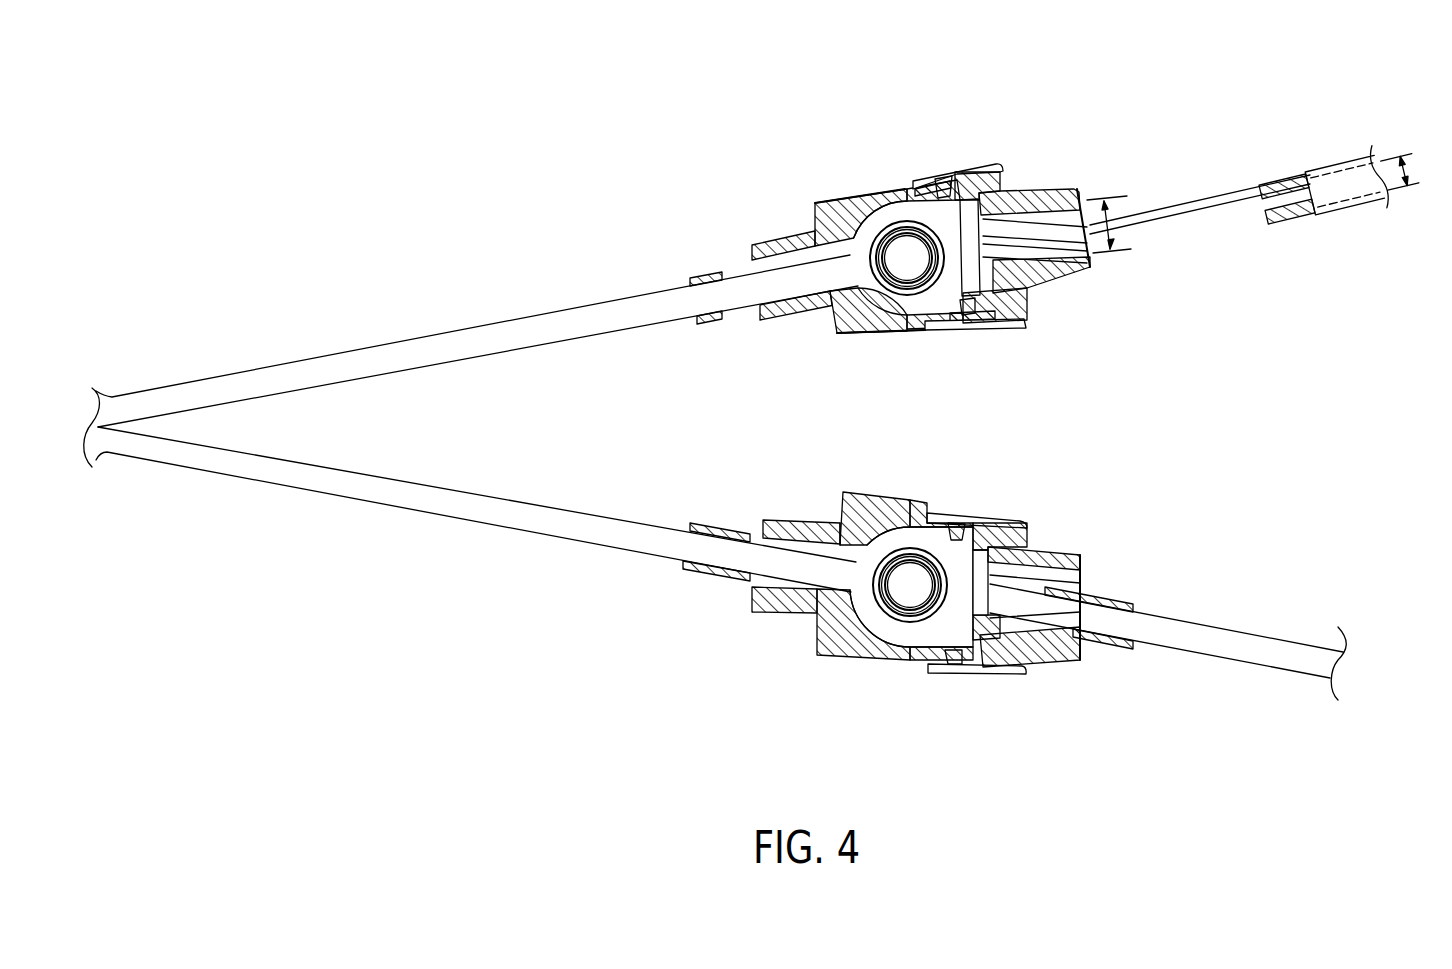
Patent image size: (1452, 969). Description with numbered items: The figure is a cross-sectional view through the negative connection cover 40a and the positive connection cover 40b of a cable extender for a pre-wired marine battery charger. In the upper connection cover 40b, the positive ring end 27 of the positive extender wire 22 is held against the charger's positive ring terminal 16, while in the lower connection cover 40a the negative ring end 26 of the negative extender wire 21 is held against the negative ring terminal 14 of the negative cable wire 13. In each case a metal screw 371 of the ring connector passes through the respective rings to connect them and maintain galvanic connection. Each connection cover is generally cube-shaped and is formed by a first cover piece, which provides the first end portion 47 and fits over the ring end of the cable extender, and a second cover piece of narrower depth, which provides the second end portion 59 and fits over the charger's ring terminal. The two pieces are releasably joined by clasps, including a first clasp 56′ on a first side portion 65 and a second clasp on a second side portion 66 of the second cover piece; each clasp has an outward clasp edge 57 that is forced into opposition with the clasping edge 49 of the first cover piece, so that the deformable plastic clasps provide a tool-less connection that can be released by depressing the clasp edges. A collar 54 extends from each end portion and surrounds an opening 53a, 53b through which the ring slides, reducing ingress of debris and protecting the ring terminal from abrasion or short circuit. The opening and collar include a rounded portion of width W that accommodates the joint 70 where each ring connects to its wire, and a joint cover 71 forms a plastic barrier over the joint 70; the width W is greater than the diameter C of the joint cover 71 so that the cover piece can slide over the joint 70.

The positive connection cover 40b is at (1118, 126).
The negative connection cover 40a is at (745, 712).
The first end portion 47 is at (817, 227).
The negative ring end 26 is at (827, 572).
The positive ring end 27 is at (900, 303).
The metal screw 371 is at (907, 257).
The clasp edge 57 is at (893, 188).
The second side portion 66 is at (985, 165).
The first side portion 65 is at (1020, 323).
The clasping edge 49 is at (920, 177).
The first clasp 56′ is at (960, 330).
The second end portion 59 is at (1000, 180).
The collar 54 is at (1030, 190).
The negative ring terminal 14 is at (1037, 563).
The positive ring terminal 16 is at (1175, 205).
The negative cable wire 13 is at (1213, 645).
The positive extender wire 22 is at (571, 310).
The negative extender wire 21 is at (531, 523).
The joint 70 is at (1307, 212).
The joint cover 71 is at (1318, 172).
The opening 53b is at (1085, 258).
The opening 53a is at (1100, 638).
The opening diameter W is at (1112, 210).
The joint cover diameter C is at (1412, 165).